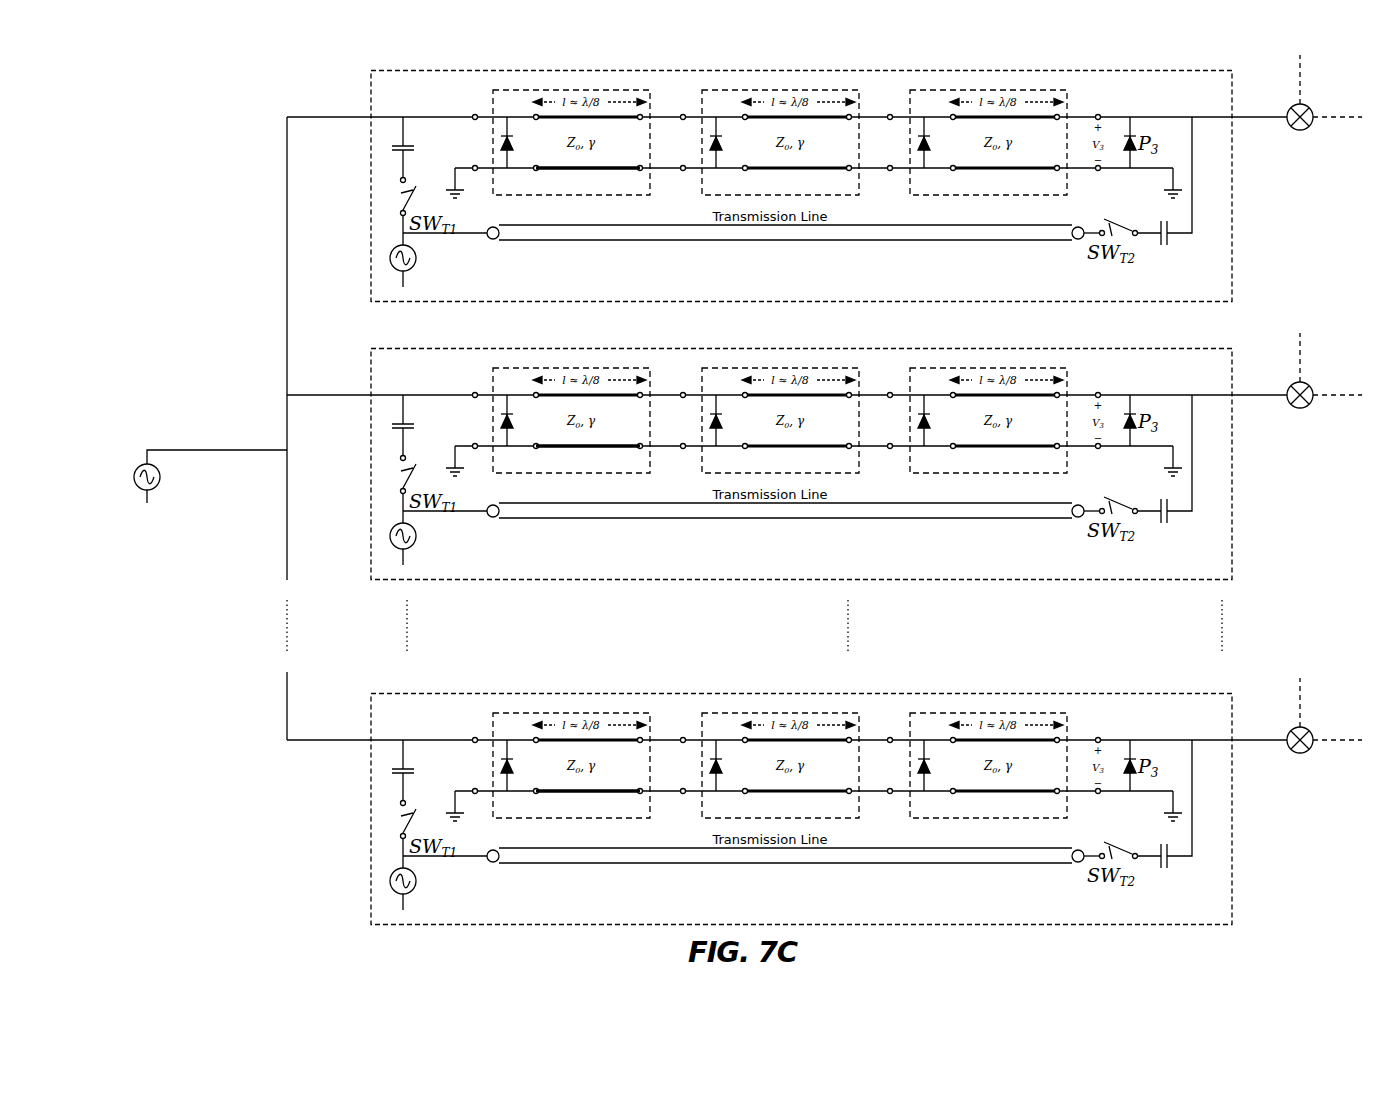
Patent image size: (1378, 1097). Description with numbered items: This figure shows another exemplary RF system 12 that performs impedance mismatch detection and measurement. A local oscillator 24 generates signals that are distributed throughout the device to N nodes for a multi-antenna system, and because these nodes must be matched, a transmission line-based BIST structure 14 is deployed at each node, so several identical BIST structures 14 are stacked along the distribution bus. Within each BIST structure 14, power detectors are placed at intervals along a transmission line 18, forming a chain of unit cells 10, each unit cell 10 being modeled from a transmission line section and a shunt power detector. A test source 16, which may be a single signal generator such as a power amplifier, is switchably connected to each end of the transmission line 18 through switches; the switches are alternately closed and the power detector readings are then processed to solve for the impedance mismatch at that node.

The unit cell 10 is at (595, 90).
The RF system 12 is at (173, 150).
The BIST structure 14 is at (333, 95).
The test source 16 is at (415, 263).
The transmission line 18 is at (580, 170).
The local oscillator 24 is at (137, 467).